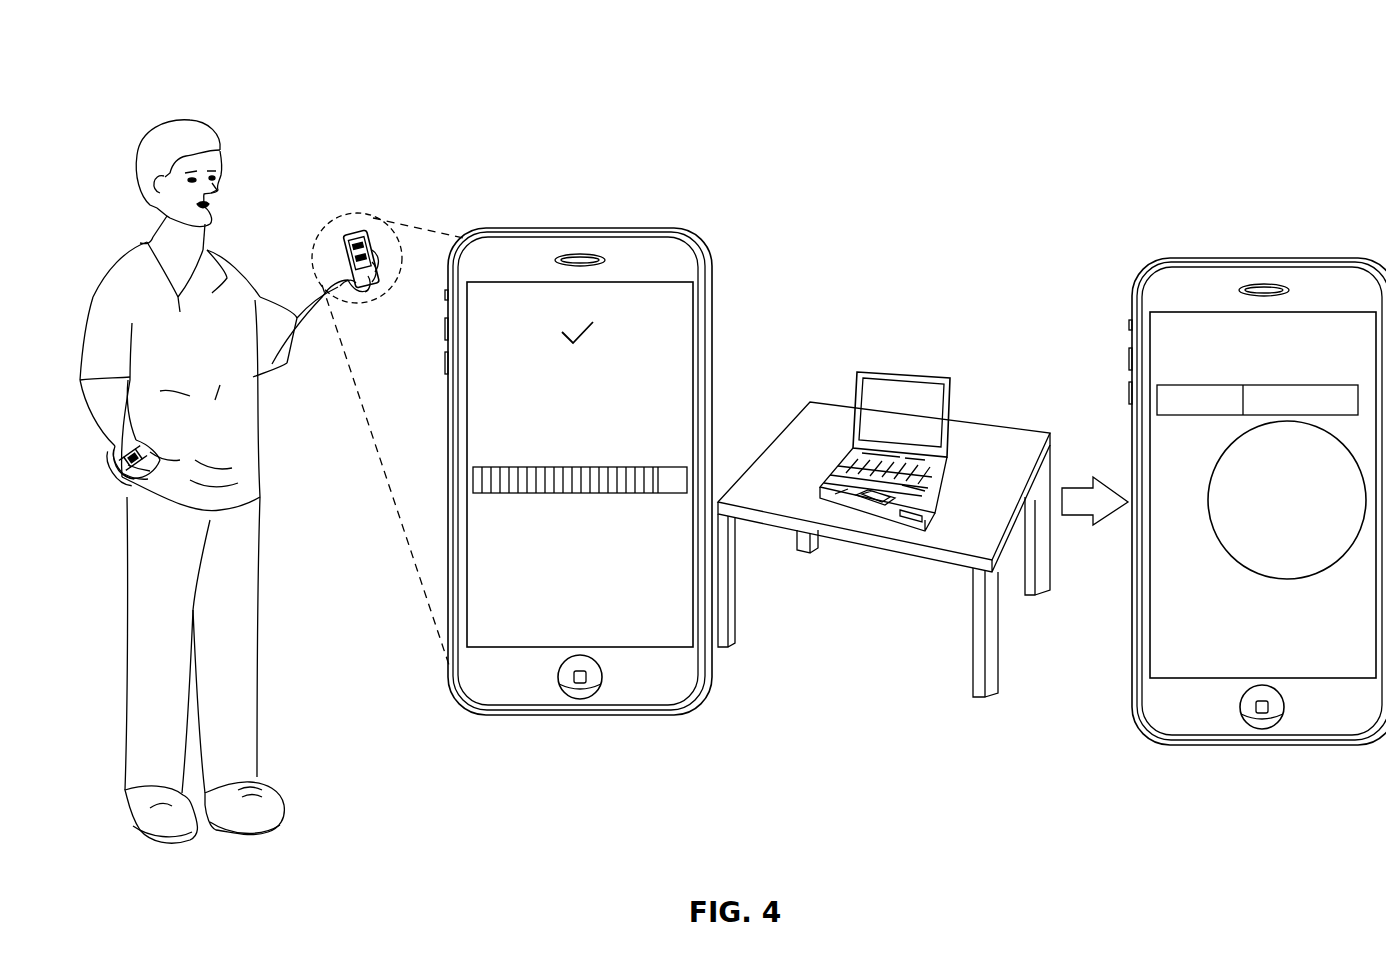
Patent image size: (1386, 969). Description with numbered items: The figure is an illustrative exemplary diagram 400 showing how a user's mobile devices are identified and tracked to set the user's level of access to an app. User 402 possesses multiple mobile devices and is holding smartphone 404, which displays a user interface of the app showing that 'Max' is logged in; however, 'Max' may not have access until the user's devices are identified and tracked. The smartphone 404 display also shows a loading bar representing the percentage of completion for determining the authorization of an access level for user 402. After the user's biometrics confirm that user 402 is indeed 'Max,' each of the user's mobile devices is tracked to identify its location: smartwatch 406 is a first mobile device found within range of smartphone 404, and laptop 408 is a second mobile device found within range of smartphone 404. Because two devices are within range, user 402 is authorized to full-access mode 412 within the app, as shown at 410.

The illustrative exemplary diagram 400 is at (173, 40).
The user 402 is at (175, 122).
The smartphone 404 is at (583, 228).
The smartwatch 406 is at (115, 452).
The laptop 408 is at (918, 372).
The smartphone display showing full-access mode 410 is at (1262, 258).
The full-access mode 412 is at (1278, 578).